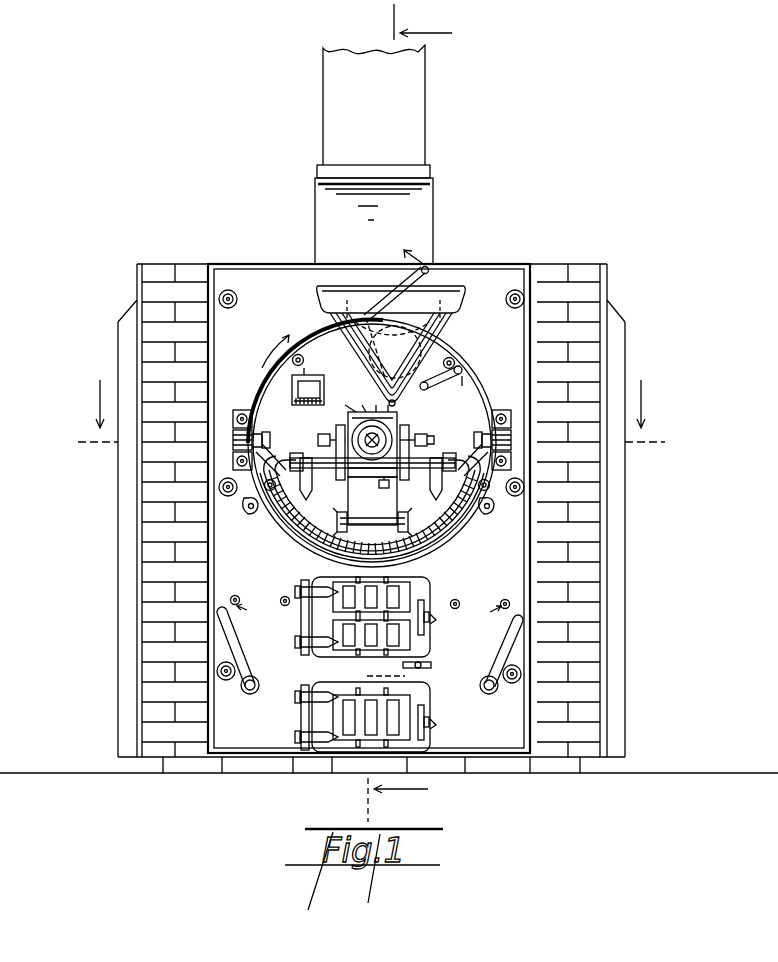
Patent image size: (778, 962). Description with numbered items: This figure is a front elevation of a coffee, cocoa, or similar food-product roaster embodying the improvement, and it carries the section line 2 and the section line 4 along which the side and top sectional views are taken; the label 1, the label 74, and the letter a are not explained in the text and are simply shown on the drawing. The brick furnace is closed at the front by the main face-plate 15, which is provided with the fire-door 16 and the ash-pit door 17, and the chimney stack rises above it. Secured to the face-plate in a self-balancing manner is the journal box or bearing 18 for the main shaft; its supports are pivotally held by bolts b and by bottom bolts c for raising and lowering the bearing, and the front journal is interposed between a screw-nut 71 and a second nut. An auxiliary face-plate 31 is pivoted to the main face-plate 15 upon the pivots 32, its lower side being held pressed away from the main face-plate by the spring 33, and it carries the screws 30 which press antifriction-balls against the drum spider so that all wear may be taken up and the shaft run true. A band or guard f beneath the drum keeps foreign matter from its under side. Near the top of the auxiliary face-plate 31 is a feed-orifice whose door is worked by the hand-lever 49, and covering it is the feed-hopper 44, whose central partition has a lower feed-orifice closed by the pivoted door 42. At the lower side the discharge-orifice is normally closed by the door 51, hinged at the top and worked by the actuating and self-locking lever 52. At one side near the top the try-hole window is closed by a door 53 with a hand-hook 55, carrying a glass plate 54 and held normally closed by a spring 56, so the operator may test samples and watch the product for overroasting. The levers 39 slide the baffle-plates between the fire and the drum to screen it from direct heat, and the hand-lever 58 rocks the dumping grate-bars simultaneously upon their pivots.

The stack 1 is at (374, 154).
The section line 2 2 is at (410, 413).
The section line 4 4 is at (371, 413).
The main face-plate 15 is at (369, 508).
The fire-door 16 is at (425, 590).
The ash-pit door 17 is at (430, 690).
The journal box or bearing 18 is at (392, 423).
The screws 30 is at (296, 355).
The auxiliary face-plate 31 is at (443, 430).
The pivots 32 is at (509, 440).
The spring 33 is at (490, 533).
The levers 39 is at (241, 641).
The pivoted door 42 is at (429, 267).
The feed-hopper 44 is at (458, 325).
The hand-lever 49 is at (441, 384).
The door 51 is at (371, 486).
The actuating and self-locking lever 52 is at (350, 511).
The door 53 is at (313, 380).
The glass or transparent plate 54 is at (313, 392).
The hand-hook 55 is at (305, 372).
The spring 56 is at (306, 404).
The hand-lever 58 is at (431, 665).
The screw-nut 71 is at (394, 436).
The shaft 74 is at (371, 440).
The arm a is at (355, 401).
The bolts b is at (317, 438).
The bottom bolts c is at (386, 488).
The band or guard f is at (260, 404).